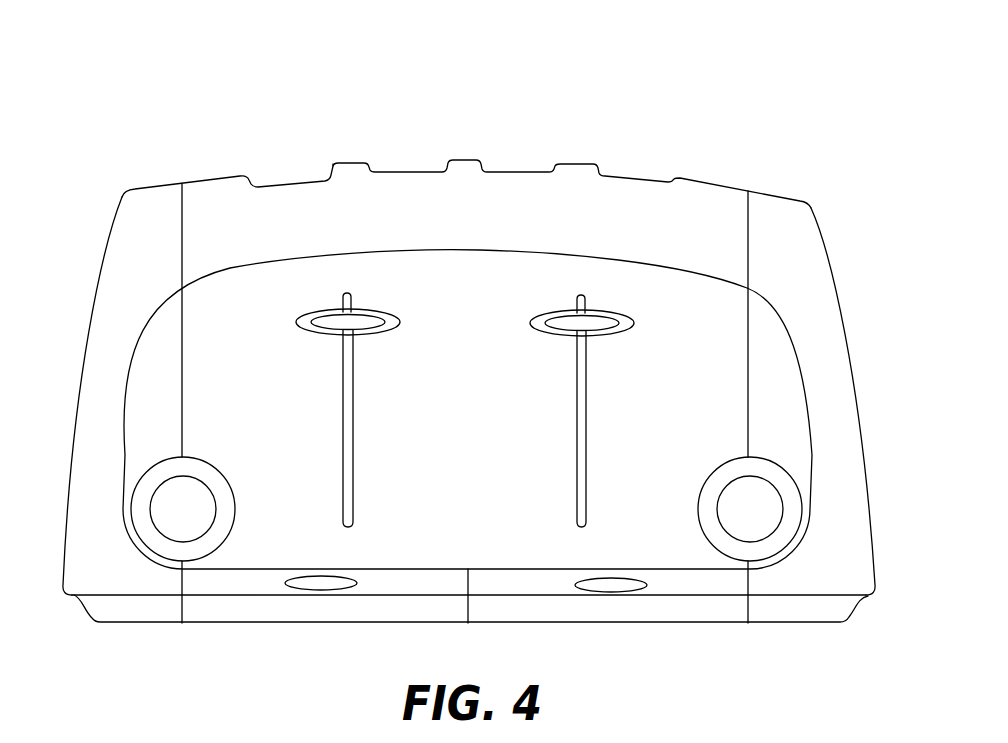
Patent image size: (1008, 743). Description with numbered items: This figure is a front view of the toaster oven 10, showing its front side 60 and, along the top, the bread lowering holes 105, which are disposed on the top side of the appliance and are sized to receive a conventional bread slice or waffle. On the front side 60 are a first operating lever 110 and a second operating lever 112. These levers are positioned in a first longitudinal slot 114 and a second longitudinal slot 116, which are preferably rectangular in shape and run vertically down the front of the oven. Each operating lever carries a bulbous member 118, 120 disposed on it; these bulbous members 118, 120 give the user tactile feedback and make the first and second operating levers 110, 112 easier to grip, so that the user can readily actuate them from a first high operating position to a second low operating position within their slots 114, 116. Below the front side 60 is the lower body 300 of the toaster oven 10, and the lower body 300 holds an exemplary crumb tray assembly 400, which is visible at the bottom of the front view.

The toaster oven 10 is at (605, 103).
The bread lowering holes 105 is at (407, 172).
The front side 60 is at (233, 312).
The first operating lever 110 is at (352, 304).
The second operating lever 112 is at (577, 303).
The first longitudinal slot 114 is at (353, 473).
The second longitudinal slot 116 is at (578, 468).
The bulbous member 118 is at (603, 323).
The bulbous member 120 is at (332, 323).
The lower body 300 is at (611, 624).
The crumb tray assembly 400 is at (372, 603).